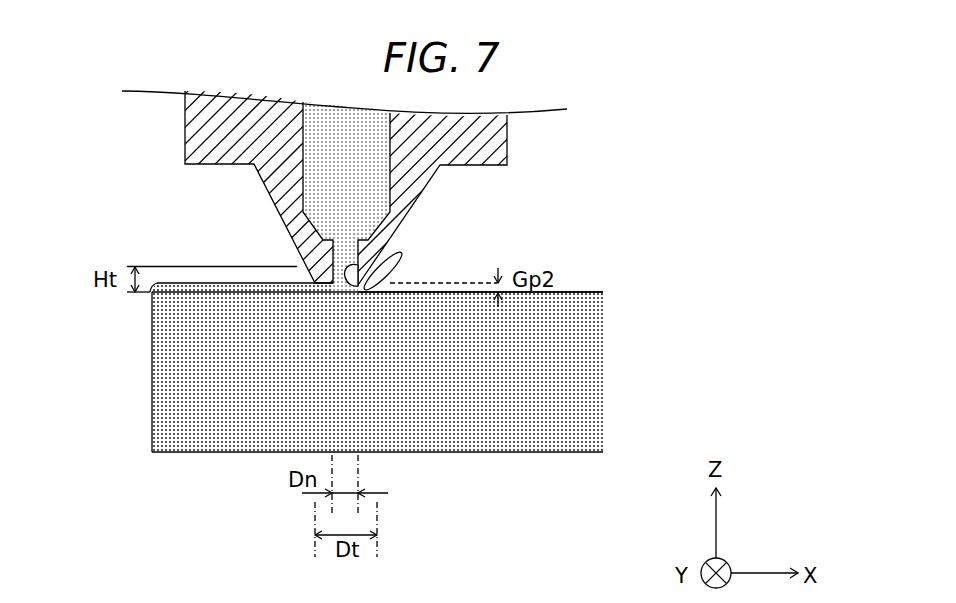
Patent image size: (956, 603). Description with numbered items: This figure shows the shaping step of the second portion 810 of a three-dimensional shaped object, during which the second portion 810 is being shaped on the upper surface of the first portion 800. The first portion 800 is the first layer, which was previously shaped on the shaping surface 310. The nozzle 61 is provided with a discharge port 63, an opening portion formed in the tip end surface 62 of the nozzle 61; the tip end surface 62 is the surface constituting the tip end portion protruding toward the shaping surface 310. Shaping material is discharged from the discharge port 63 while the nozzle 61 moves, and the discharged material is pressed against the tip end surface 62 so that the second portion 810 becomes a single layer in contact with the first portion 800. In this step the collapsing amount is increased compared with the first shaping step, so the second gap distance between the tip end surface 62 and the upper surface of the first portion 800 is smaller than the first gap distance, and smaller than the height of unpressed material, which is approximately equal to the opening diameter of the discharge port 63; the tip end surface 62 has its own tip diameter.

The nozzle 61 is at (421, 205).
The tip end surface 62 is at (377, 283).
The discharge port 63 is at (378, 259).
The shaping surface 310 is at (570, 292).
The first portion 800 is at (170, 367).
The second portion 810 is at (150, 293).